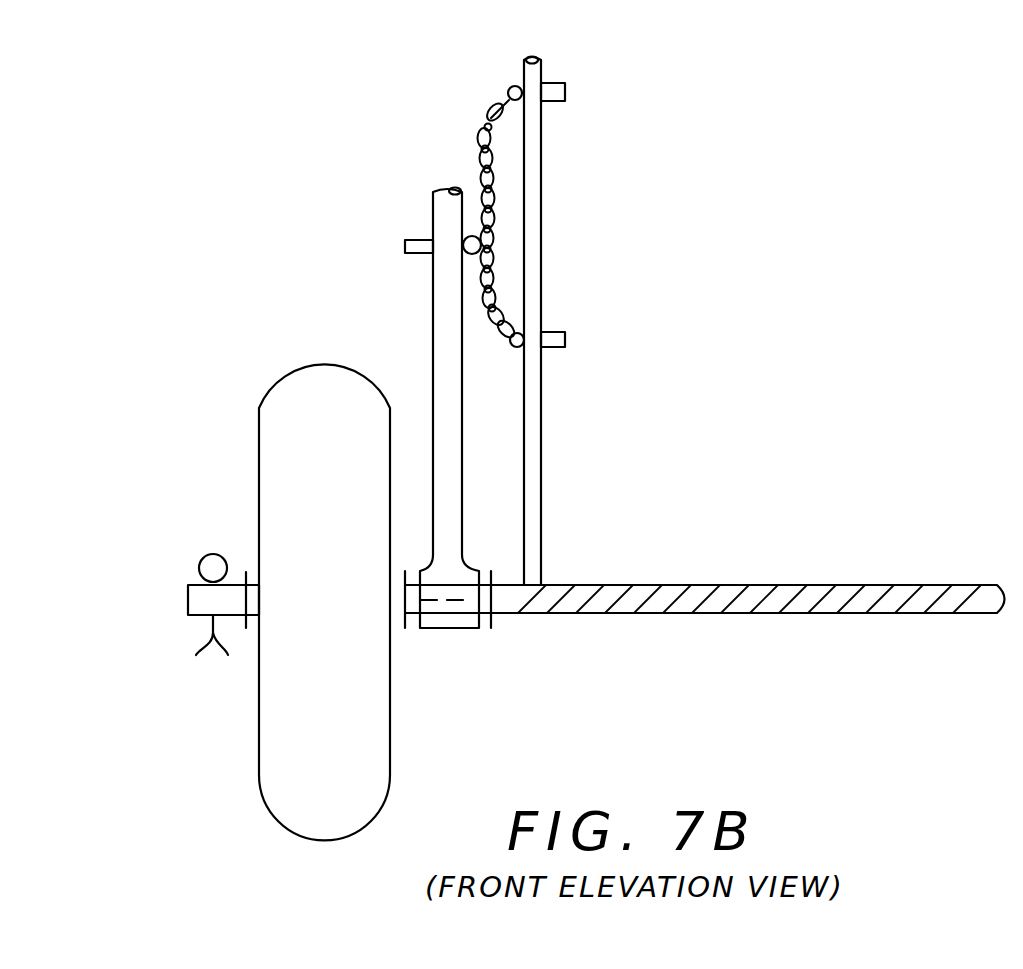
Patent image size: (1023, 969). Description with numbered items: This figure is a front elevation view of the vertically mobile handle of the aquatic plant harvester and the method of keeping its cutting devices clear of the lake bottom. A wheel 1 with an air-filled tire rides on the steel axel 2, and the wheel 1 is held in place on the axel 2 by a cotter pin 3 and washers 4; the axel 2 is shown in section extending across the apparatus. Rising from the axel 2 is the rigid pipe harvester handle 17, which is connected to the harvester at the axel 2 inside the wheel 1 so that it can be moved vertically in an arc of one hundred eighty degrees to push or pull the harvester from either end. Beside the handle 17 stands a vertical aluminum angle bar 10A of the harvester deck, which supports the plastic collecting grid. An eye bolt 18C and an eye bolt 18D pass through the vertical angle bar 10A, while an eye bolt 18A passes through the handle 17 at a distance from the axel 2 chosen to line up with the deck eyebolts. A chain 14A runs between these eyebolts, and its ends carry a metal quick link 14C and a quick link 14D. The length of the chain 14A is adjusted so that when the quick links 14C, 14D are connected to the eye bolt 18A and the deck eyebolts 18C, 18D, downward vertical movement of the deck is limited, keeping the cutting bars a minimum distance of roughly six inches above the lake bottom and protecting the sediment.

The wheels 1 is at (290, 432).
The axel 2 is at (205, 600).
The cotter pin 3 is at (212, 568).
The washers 4 is at (246, 572).
The vertical angle bar 10A is at (535, 225).
The chain 14A is at (490, 295).
The quick link 14C is at (500, 108).
The quick link 14D is at (503, 322).
The harvester handle 17 is at (443, 212).
The eye bolt 18A is at (410, 247).
The eye bolt 18C is at (555, 93).
The eye bolt 18D is at (565, 340).